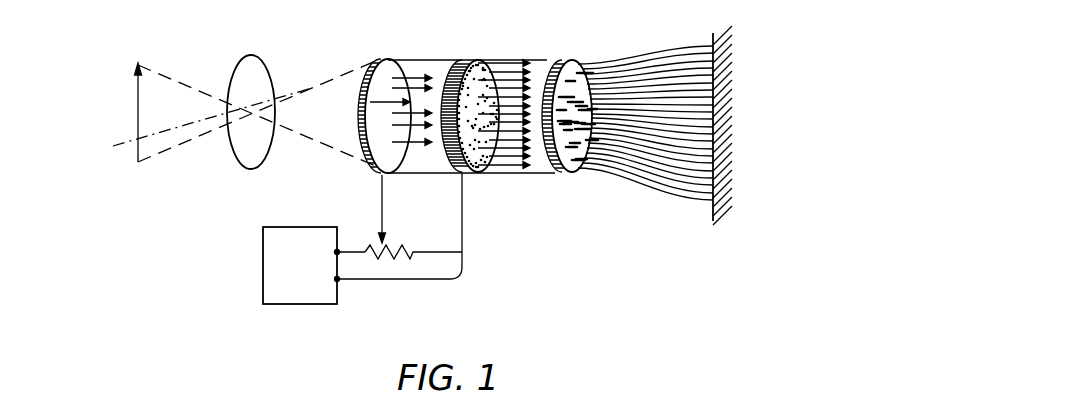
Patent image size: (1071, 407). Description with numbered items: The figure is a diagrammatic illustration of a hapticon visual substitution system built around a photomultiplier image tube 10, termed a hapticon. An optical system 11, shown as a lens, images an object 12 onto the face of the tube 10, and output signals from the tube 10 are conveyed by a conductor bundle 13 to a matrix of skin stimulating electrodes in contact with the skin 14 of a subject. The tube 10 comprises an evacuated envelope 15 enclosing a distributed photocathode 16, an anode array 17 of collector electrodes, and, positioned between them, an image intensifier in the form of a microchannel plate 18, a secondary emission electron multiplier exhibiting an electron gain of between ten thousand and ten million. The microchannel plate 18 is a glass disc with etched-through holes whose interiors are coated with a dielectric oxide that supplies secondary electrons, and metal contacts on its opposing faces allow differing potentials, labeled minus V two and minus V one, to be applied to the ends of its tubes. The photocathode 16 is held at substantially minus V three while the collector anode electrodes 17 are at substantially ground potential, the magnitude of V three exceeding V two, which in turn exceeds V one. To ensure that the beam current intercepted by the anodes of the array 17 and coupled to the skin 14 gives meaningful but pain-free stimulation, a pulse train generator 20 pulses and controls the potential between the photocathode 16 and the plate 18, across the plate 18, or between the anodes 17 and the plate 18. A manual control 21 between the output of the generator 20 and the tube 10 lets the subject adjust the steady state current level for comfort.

The photomultiplier image tube 10 is at (496, 173).
The optical system 11 is at (244, 156).
The object 12 is at (139, 120).
The conductor bundle 13 is at (652, 198).
The skin 14 is at (723, 166).
The evacuated envelope 15 is at (528, 60).
The distributed photocathode 16 is at (360, 92).
The anode array 17 is at (573, 175).
The microchannel plate 18 is at (448, 165).
The pulse train generator 20 is at (303, 305).
The manual control 21 is at (392, 244).